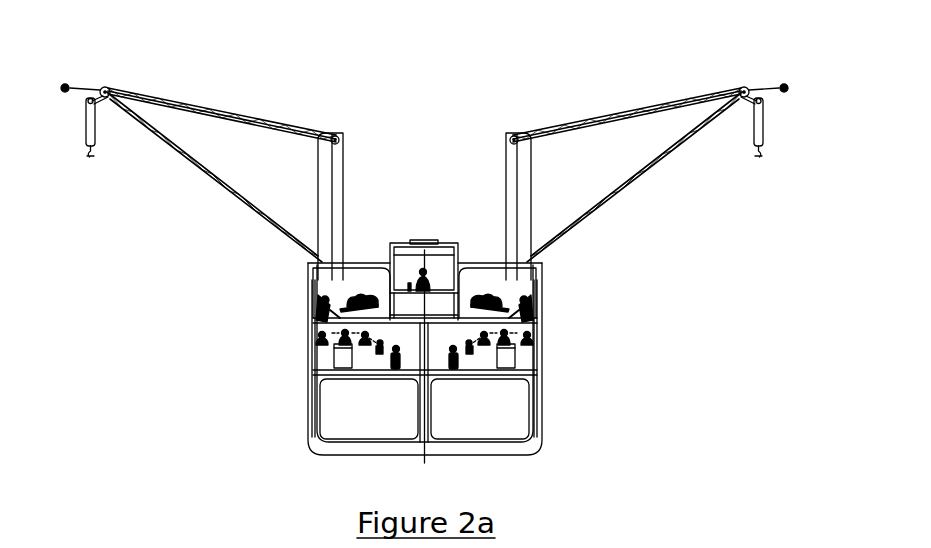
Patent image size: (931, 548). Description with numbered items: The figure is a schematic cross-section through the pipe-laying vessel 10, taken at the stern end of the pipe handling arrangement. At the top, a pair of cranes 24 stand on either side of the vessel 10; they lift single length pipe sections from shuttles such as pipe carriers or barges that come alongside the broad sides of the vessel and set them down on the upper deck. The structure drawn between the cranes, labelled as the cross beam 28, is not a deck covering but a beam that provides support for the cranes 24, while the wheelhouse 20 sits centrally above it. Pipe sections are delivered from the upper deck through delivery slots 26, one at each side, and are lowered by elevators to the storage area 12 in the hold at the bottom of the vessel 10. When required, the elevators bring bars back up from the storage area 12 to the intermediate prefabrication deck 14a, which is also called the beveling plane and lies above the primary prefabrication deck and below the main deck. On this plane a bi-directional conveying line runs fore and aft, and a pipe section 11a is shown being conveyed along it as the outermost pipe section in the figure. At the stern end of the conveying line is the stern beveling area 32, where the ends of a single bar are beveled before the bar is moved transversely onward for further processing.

The vessel 10 is at (290, 442).
The storage area 12 is at (511, 415).
The pipe section 11a is at (540, 337).
The intermediate prefabrication deck 14a is at (540, 363).
The wheelhouse 20 is at (438, 277).
The crane 24 is at (190, 105).
The delivery slot 26 is at (310, 320).
The cross beam 28 is at (360, 267).
The stern beveling area 32 is at (310, 340).